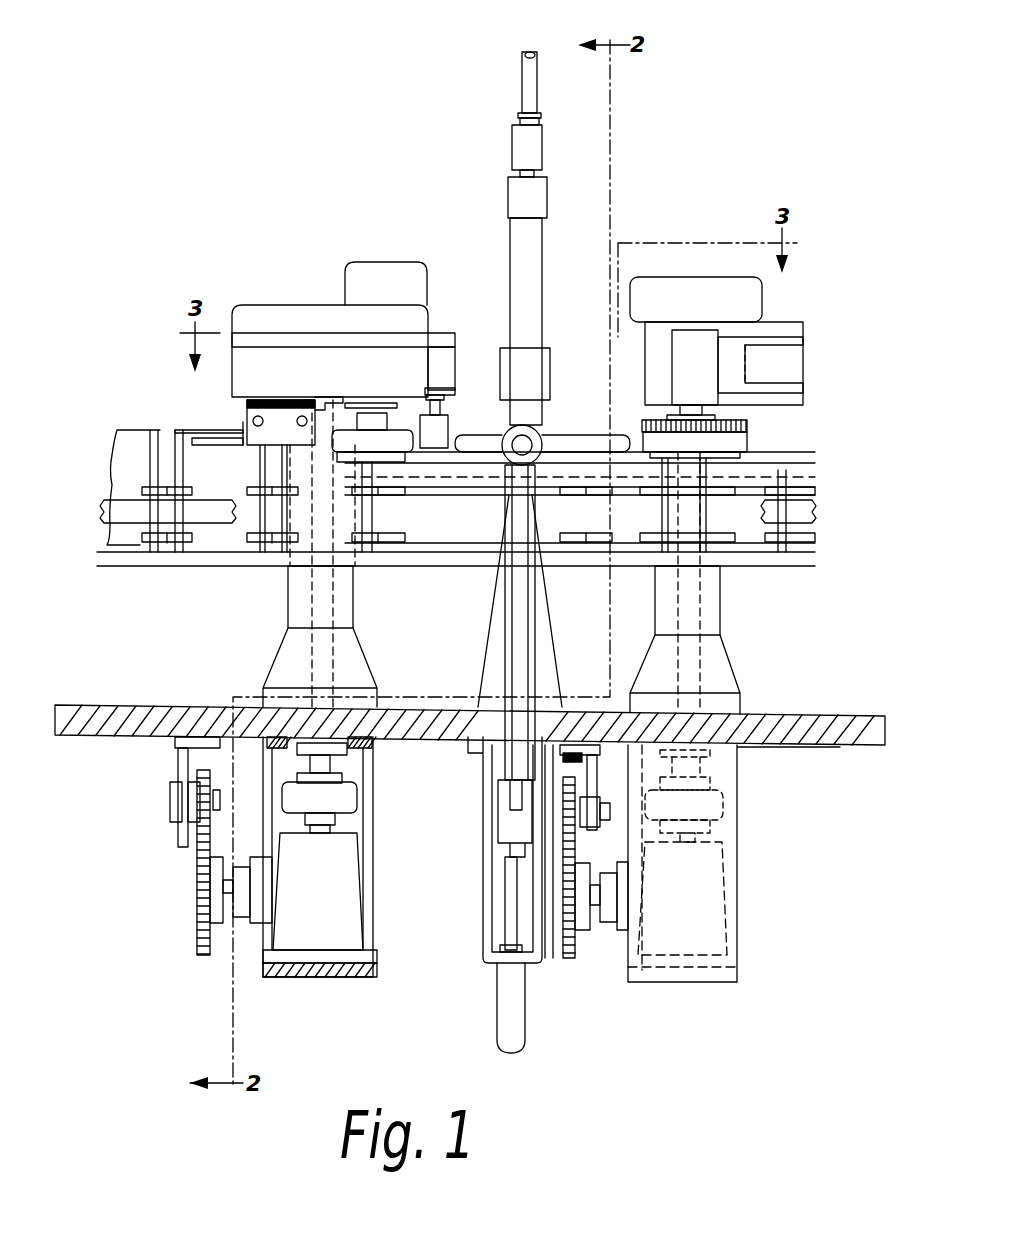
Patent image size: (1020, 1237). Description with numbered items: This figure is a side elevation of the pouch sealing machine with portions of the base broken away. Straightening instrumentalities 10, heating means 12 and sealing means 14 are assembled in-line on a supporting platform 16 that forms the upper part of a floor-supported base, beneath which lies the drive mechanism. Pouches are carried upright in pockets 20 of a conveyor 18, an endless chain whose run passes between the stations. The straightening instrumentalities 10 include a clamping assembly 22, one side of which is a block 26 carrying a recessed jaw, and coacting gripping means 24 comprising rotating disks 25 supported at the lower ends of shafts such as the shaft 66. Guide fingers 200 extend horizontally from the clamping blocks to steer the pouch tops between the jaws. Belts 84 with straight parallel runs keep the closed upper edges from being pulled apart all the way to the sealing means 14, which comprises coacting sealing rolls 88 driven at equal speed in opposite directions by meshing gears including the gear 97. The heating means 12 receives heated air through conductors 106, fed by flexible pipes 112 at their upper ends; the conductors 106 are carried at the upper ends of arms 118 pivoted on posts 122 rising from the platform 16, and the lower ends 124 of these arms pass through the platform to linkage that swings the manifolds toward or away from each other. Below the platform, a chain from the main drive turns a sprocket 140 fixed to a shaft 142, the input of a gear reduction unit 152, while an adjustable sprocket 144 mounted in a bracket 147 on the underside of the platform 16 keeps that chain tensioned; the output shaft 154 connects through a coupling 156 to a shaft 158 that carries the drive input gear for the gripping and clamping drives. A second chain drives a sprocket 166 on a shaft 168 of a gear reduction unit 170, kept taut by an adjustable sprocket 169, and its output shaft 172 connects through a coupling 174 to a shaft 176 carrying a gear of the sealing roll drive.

The straightening instrumentalities 10 is at (279, 247).
The heating means 12 is at (505, 552).
The sealing means 14 is at (715, 354).
The supporting platform 16 is at (782, 720).
The conveyor 18 is at (130, 576).
The pockets 20 is at (218, 540).
The clamping assembly 22 is at (245, 422).
The gripping means 24 is at (403, 402).
The rotating disks 25 is at (375, 437).
The block 26 is at (290, 410).
The shaft 66 is at (336, 407).
The belts 84 is at (486, 437).
The sealing rolls 88 is at (747, 442).
The gear 97 is at (643, 421).
The conductors 106 is at (510, 238).
The flexible pipes 112 is at (522, 78).
The arms 118 is at (531, 493).
The posts 122 is at (490, 648).
The lower ends of the arms 124 is at (515, 603).
The sprocket 140 is at (197, 888).
The shaft 142 is at (232, 900).
The sprocket 144 is at (200, 785).
The bracket 147 is at (178, 765).
The gear reduction unit 152 is at (320, 857).
The output shaft 154 is at (335, 827).
The coupling 156 is at (357, 795).
The shaft 158 is at (347, 762).
The sprocket 166 is at (570, 960).
The shaft 168 is at (592, 902).
The adjustable sprocket 169 is at (575, 790).
The gear reduction unit 170 is at (734, 863).
The output shaft 172 is at (740, 838).
The coupling 174 is at (740, 803).
The shaft 176 is at (740, 768).
The guide fingers 200 is at (205, 438).